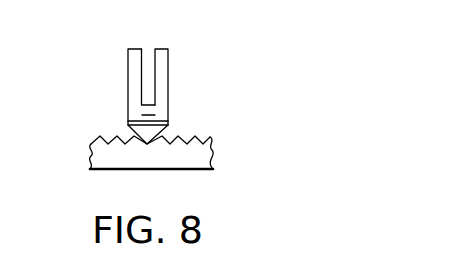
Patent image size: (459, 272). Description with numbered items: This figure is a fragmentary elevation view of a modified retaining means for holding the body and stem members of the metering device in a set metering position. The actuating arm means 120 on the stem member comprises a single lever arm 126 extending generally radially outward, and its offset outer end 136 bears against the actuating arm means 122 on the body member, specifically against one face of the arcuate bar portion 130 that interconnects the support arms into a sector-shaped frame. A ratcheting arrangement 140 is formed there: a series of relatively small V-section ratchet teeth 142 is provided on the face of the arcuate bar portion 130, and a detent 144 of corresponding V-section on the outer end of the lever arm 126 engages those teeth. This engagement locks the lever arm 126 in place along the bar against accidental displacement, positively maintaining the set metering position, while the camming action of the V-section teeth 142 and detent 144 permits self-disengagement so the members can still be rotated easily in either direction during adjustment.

The actuating arm means 120 is at (137, 72).
The lever arm 126 is at (163, 49).
The offset outer end 136 is at (162, 80).
The ratcheting arrangement 140 is at (120, 130).
The detent 144 is at (168, 133).
The ratchet teeth 142 is at (213, 137).
The actuating arm means 122 is at (180, 141).
The arcuate bar portion 130 is at (115, 160).